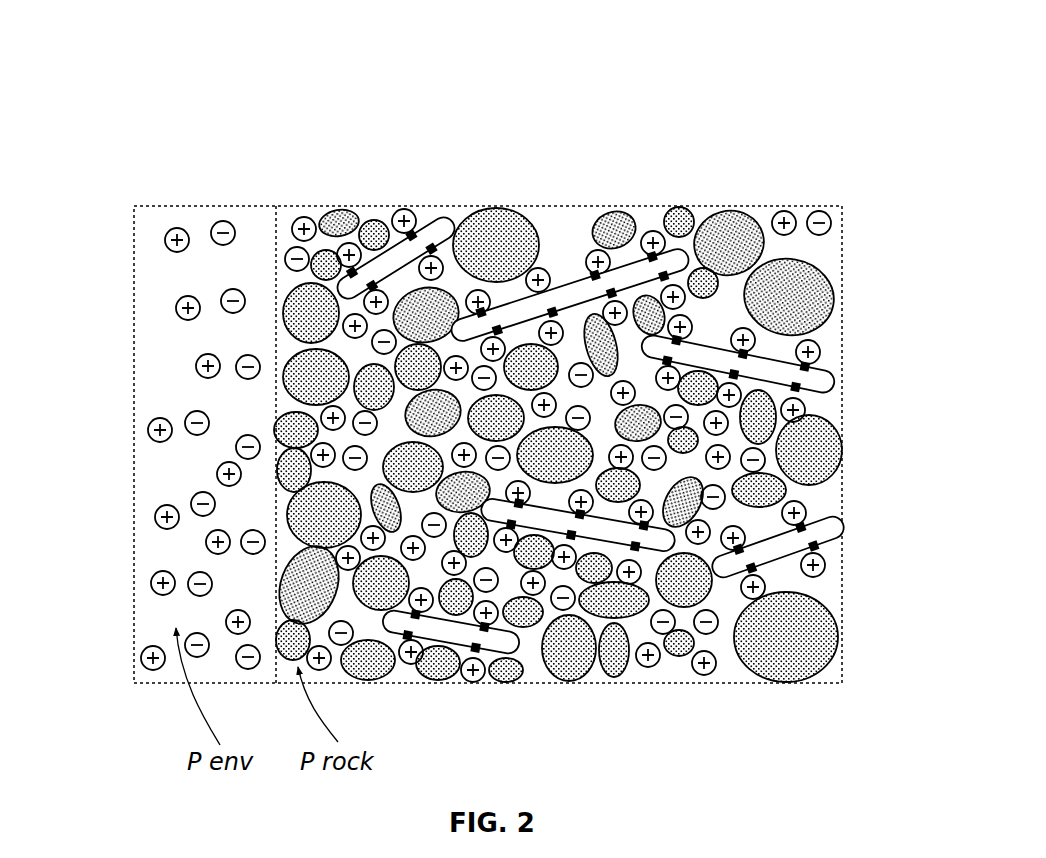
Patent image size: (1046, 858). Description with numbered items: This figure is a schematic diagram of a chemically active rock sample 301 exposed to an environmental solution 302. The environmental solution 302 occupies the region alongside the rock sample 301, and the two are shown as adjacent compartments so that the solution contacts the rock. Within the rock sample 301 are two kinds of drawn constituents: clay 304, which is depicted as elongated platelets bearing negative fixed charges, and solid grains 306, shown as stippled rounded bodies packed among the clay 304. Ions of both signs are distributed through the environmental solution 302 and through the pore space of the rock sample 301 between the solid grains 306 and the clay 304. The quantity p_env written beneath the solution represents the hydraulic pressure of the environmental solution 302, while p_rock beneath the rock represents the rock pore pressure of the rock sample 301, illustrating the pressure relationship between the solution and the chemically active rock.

The rock sample 301 is at (405, 40).
The environmental solution 302 is at (208, 268).
The clay 304 is at (553, 262).
The solid grains 306 is at (764, 243).